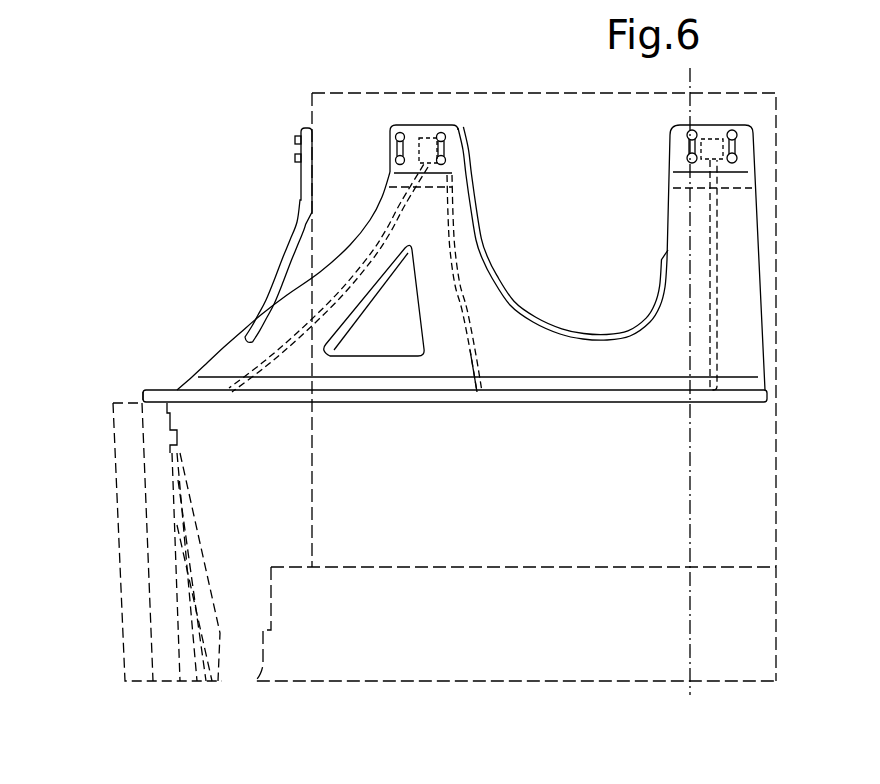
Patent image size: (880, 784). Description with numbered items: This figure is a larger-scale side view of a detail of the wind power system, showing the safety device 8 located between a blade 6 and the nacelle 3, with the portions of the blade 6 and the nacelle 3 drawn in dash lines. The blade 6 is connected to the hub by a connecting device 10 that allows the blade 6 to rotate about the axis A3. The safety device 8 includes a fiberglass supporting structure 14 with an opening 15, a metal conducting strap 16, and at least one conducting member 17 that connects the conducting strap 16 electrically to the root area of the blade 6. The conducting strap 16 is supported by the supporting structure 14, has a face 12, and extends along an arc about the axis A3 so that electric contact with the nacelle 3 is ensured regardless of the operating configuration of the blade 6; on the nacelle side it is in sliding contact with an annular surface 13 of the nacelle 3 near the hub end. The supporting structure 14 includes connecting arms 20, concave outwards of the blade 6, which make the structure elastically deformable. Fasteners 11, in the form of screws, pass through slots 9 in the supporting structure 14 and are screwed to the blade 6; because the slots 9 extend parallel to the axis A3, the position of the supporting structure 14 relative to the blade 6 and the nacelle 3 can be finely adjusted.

The nacelle 3 is at (140, 548).
The blade 6 is at (567, 145).
The safety device 8 is at (217, 337).
The slots 9 is at (402, 133).
The connecting device 10 is at (310, 593).
The fasteners 11 is at (295, 158).
The face 12 is at (360, 400).
The annular surface 13 is at (160, 455).
The supporting structure 14 is at (483, 341).
The opening 15 is at (389, 325).
The conducting strap 16 is at (154, 391).
The conducting member 17 is at (392, 237).
The connecting arms 20 is at (305, 204).
The axis A3 is at (690, 437).